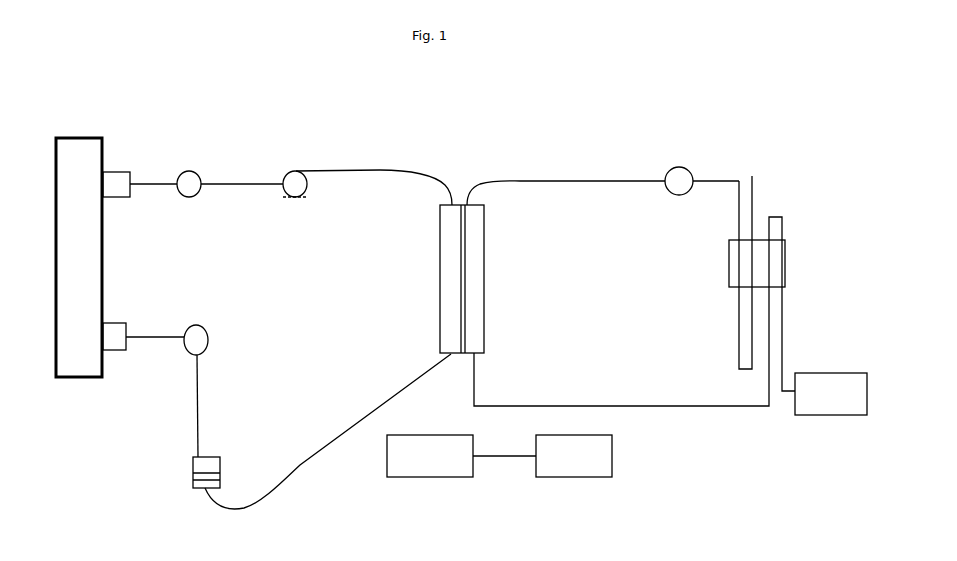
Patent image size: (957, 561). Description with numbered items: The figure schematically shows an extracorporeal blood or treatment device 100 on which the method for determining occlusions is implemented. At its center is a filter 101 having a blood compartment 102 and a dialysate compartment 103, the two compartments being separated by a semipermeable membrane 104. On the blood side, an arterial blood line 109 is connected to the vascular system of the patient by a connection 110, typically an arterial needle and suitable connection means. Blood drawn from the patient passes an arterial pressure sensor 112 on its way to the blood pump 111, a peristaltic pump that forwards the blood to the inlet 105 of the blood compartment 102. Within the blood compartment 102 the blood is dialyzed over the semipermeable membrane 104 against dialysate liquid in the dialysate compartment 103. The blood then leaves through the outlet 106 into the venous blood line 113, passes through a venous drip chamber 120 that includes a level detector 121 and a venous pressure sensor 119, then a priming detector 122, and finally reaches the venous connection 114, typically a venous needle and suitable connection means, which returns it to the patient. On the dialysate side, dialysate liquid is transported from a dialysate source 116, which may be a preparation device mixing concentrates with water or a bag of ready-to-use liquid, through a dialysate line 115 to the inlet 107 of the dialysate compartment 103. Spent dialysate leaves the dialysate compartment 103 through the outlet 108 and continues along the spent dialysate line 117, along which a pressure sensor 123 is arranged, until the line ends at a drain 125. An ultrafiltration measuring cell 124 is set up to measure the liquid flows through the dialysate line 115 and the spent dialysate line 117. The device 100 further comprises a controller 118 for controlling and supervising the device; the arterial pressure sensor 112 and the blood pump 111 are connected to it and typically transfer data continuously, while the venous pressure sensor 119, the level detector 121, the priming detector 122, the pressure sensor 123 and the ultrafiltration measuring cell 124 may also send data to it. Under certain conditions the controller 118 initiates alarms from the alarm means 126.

The extracorporeal blood or treatment device 100 is at (289, 72).
The filter 101 is at (461, 176).
The blood compartment 102 is at (447, 253).
The dialysate compartment 103 is at (476, 270).
The semipermeable membrane 104 is at (469, 328).
The inlet 105 is at (454, 192).
The outlet 106 is at (433, 359).
The inlet 107 is at (480, 360).
The outlet 108 is at (566, 182).
The arterial blood line 109 is at (359, 162).
The connection 110 is at (122, 143).
The blood pump 111 is at (290, 160).
The arterial pressure sensor 112 is at (189, 206).
The venous blood line 113 is at (329, 440).
The venous connection 114 is at (118, 313).
The dialysate line 115 is at (609, 398).
The dialysate source 116 is at (831, 394).
The spent dialysate line 117 is at (621, 163).
The controller 118 is at (461, 456).
The venous pressure sensor 119 is at (190, 480).
The venous drip chamber 120 is at (150, 462).
The level detector 121 is at (188, 473).
The priming detector 122 is at (212, 333).
The pressure sensor 123 is at (688, 158).
The ultrafiltration measuring cell 124 is at (797, 265).
The drain 125 is at (755, 160).
The alarm means 126 is at (574, 456).